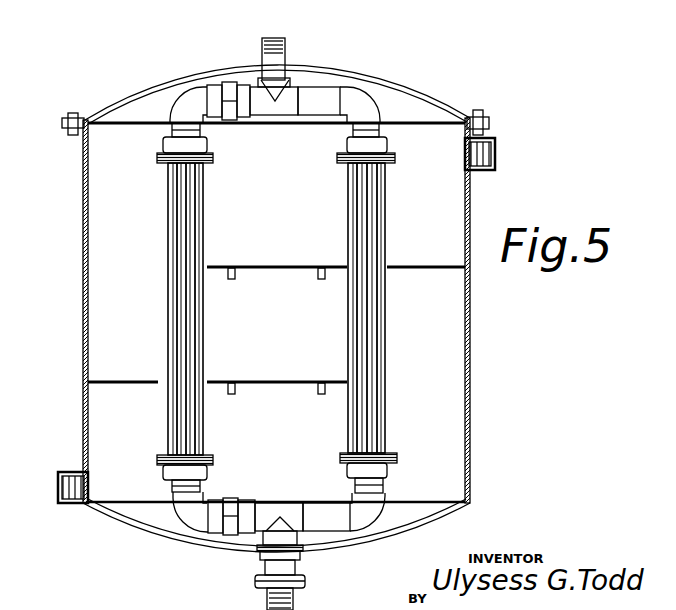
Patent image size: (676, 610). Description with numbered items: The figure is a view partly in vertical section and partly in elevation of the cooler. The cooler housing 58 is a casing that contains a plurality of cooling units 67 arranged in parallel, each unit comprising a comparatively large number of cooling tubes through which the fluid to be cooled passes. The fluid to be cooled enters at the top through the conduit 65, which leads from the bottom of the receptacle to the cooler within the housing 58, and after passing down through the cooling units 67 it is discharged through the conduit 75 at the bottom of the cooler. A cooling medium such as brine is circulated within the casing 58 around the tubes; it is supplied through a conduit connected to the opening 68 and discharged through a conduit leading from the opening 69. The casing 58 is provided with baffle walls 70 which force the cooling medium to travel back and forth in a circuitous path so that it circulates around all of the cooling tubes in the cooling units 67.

The housing 58 is at (475, 412).
The conduit 65 is at (287, 54).
The cooling units 67 is at (207, 213).
The opening 68 is at (67, 470).
The opening 69 is at (494, 138).
The baffle walls 70 is at (297, 269).
The conduit 75 is at (296, 597).